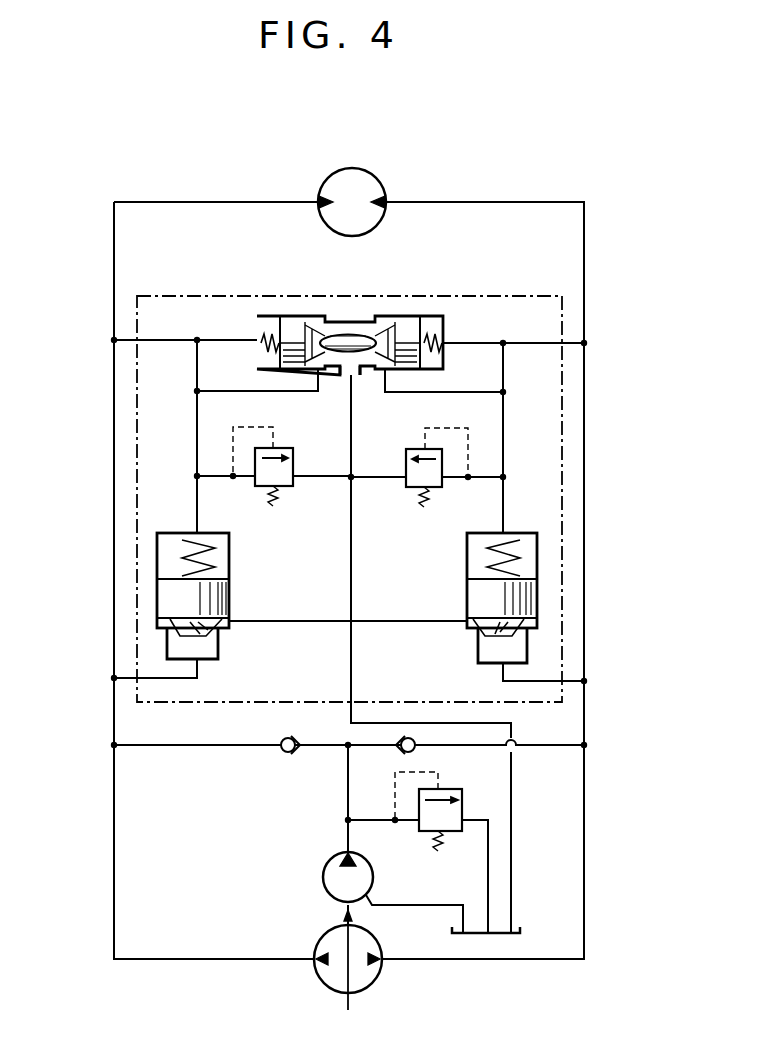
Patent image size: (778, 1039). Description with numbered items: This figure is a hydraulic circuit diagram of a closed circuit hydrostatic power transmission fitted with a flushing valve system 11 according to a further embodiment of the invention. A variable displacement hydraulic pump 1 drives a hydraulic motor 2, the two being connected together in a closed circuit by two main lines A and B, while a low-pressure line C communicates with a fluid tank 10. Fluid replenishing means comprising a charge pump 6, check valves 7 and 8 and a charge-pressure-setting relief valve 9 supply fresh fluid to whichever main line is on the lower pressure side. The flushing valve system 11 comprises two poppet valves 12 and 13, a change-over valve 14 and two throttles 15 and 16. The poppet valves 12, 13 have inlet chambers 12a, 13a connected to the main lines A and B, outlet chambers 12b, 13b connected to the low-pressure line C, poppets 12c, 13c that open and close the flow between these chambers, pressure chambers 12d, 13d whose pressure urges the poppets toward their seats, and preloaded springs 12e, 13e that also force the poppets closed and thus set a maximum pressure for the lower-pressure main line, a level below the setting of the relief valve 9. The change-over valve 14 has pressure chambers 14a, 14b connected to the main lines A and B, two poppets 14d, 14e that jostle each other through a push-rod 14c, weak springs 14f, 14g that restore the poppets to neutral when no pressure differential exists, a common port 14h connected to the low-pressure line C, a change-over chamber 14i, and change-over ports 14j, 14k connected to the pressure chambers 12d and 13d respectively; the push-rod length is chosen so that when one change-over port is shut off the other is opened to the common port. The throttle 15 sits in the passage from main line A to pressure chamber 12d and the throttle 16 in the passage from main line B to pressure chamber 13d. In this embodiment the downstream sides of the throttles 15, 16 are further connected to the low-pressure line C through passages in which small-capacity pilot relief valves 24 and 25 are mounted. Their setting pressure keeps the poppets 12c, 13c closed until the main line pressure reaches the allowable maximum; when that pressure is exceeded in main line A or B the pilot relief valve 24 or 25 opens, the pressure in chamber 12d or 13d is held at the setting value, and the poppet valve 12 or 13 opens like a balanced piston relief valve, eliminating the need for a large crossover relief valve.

The variable displacement hydraulic pump 1 is at (330, 985).
The hydraulic motor 2 is at (376, 181).
The charge pump 6 is at (331, 858).
The check valve 7 is at (282, 753).
The check valve 8 is at (400, 752).
The charge-pressure-setting relief valve 9 is at (419, 828).
The fluid tank 10 is at (456, 932).
The flushing valve system 11 is at (175, 294).
The poppet valve 12 is at (172, 605).
The inlet chamber 12a is at (218, 650).
The outlet chamber 12b is at (222, 626).
The poppet 12c is at (229, 604).
The pressure chamber 12d is at (222, 574).
The spring 12e is at (214, 545).
The poppet valve 13 is at (516, 605).
The inlet chamber 13a is at (480, 650).
The outlet chamber 13b is at (468, 627).
The poppet 13c is at (460, 604).
The pressure chamber 13d is at (466, 574).
The spring 13e is at (473, 545).
The change-over valve 14 is at (347, 336).
The pressure chamber 14a is at (257, 322).
The pressure chamber 14b is at (442, 322).
The push-rod 14c is at (350, 333).
The poppet 14d is at (290, 367).
The poppet 14e is at (415, 363).
The weak spring 14f is at (257, 358).
The weak spring 14g is at (443, 354).
The common port 14h is at (355, 375).
The change-over chamber 14i is at (372, 333).
The change-over port 14j is at (340, 373).
The change-over port 14k is at (392, 369).
The throttle 15 is at (203, 376).
The throttle 16 is at (506, 376).
The pilot relief valve 24 is at (293, 450).
The pilot relief valve 25 is at (406, 452).
The main line A is at (114, 447).
The main line B is at (586, 447).
The low-pressure line C is at (513, 806).